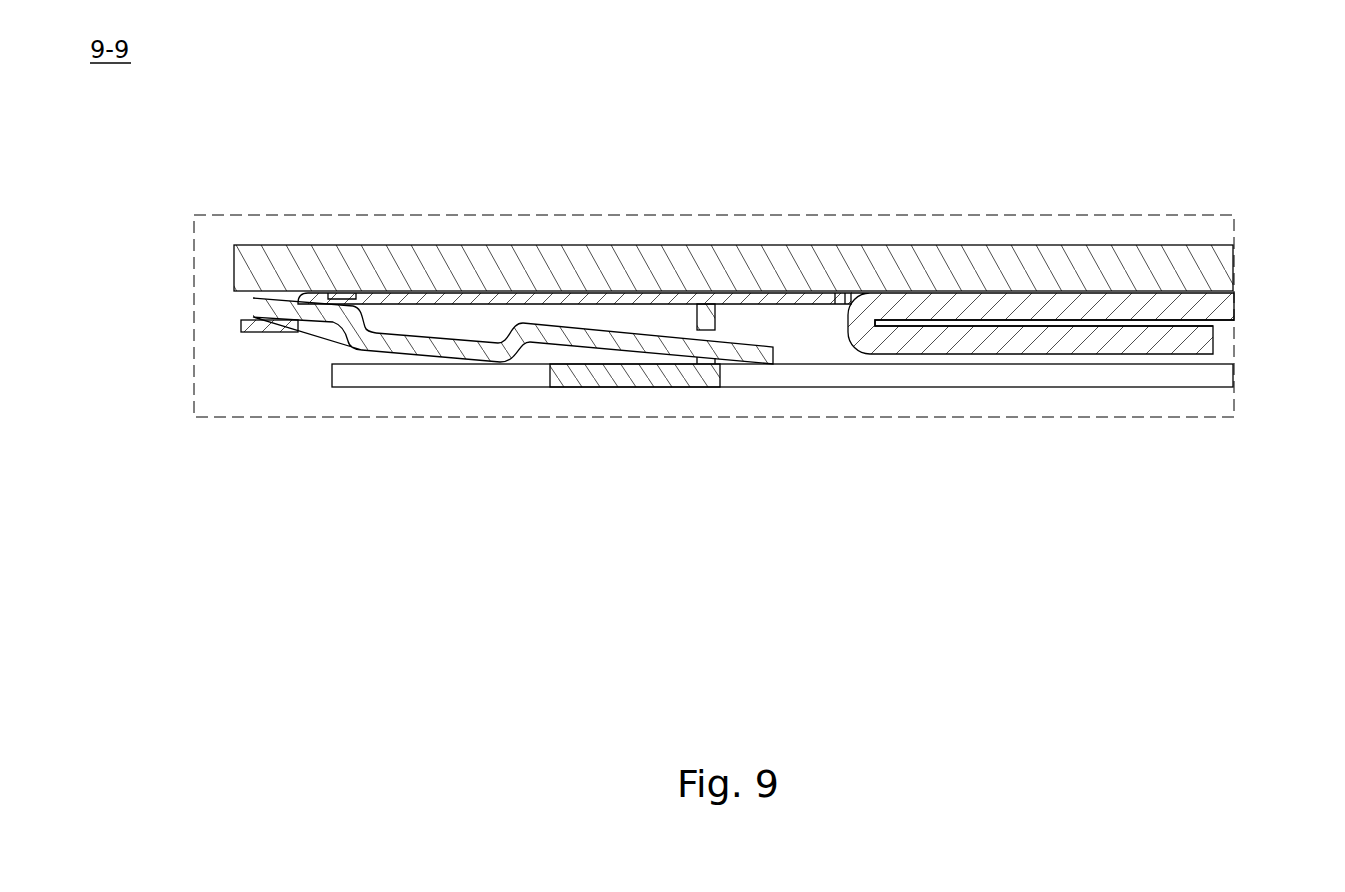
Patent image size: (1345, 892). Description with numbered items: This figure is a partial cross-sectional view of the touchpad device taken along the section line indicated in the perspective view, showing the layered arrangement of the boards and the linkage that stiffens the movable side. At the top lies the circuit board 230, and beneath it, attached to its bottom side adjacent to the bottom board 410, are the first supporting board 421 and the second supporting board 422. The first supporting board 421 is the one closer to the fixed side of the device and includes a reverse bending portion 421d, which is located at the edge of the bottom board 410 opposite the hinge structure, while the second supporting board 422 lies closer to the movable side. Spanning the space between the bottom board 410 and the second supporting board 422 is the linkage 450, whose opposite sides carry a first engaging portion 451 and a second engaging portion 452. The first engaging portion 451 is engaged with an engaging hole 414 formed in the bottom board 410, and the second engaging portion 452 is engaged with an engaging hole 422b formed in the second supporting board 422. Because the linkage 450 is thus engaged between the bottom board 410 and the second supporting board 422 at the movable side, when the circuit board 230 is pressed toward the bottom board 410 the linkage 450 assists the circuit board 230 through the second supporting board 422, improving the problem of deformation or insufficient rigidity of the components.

The circuit board 230 is at (1236, 273).
The first supporting board 421 is at (1236, 307).
The reverse bending portion 421d is at (1044, 340).
The second supporting board 422 is at (500, 300).
The engaging hole 422b is at (309, 338).
The linkage 450 is at (414, 344).
The first engaging portion 451 is at (625, 342).
The second engaging portion 452 is at (332, 317).
The engaging hole 414 is at (701, 377).
The bottom board 410 is at (1236, 379).